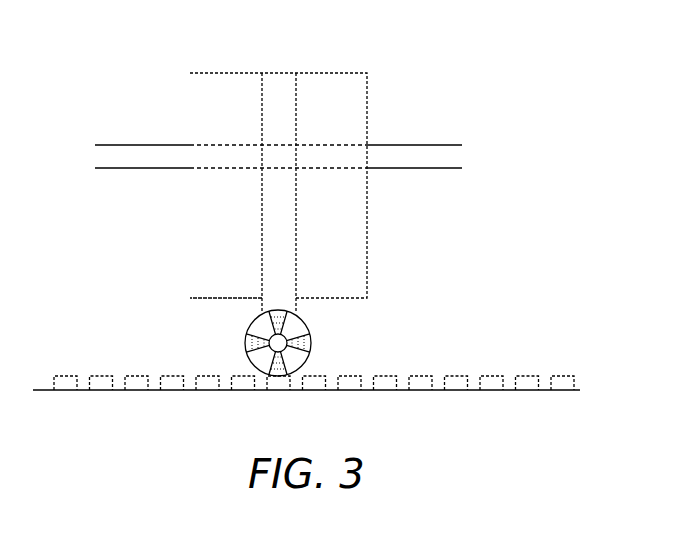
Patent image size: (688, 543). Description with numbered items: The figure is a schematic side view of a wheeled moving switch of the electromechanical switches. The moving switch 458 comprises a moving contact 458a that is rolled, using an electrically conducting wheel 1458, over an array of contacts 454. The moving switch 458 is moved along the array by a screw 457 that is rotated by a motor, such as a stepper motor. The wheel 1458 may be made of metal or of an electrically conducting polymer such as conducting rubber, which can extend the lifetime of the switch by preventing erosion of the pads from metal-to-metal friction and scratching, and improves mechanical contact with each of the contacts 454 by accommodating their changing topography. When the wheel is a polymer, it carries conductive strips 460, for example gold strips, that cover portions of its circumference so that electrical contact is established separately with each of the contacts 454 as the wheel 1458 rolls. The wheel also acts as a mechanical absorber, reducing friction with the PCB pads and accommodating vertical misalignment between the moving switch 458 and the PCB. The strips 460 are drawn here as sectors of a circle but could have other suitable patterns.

The array of contacts 454 is at (442, 392).
The screw 457 is at (448, 146).
The moving switch 458 is at (316, 159).
The moving contact 458a is at (279, 72).
The electrically conducting wheel 1458 is at (283, 326).
The conductive strips 460 is at (250, 331).